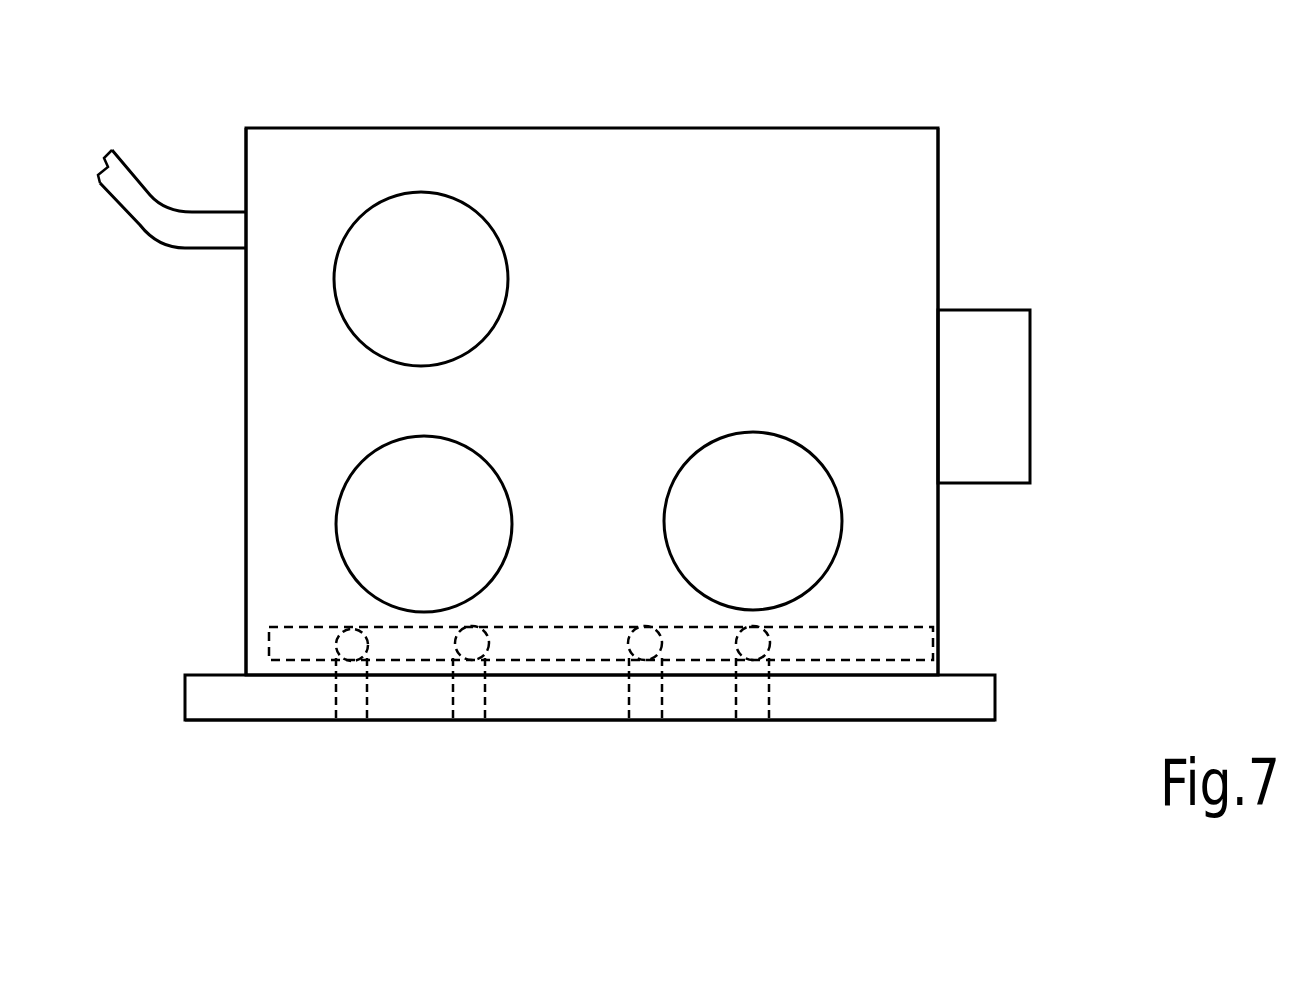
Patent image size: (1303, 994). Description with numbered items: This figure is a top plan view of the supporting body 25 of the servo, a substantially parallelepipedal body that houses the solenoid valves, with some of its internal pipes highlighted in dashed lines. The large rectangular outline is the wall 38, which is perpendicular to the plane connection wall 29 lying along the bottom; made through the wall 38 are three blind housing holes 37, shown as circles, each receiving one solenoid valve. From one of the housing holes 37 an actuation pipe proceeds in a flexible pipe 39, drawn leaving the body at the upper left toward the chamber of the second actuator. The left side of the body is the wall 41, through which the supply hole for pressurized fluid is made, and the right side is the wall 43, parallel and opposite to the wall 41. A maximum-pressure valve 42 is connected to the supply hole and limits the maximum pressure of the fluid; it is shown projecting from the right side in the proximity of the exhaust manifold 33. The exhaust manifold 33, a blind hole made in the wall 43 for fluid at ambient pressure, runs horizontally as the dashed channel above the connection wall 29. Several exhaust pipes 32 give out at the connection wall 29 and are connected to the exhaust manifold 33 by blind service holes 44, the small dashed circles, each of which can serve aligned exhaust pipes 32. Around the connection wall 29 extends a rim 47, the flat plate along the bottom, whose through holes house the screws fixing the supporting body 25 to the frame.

The supporting body 25 is at (573, 822).
The connection wall 29 is at (606, 732).
The exhaust pipes 32 is at (350, 703).
The exhaust manifold 33 is at (698, 642).
The housing hole 37 is at (421, 270).
The wall 38 is at (800, 173).
The flexible pipe 39 is at (150, 186).
The wall 41 is at (232, 411).
The maximum-pressure valve 42 is at (1010, 398).
The wall 43 is at (955, 191).
The blind service holes 44 is at (345, 650).
The rim 47 is at (970, 706).